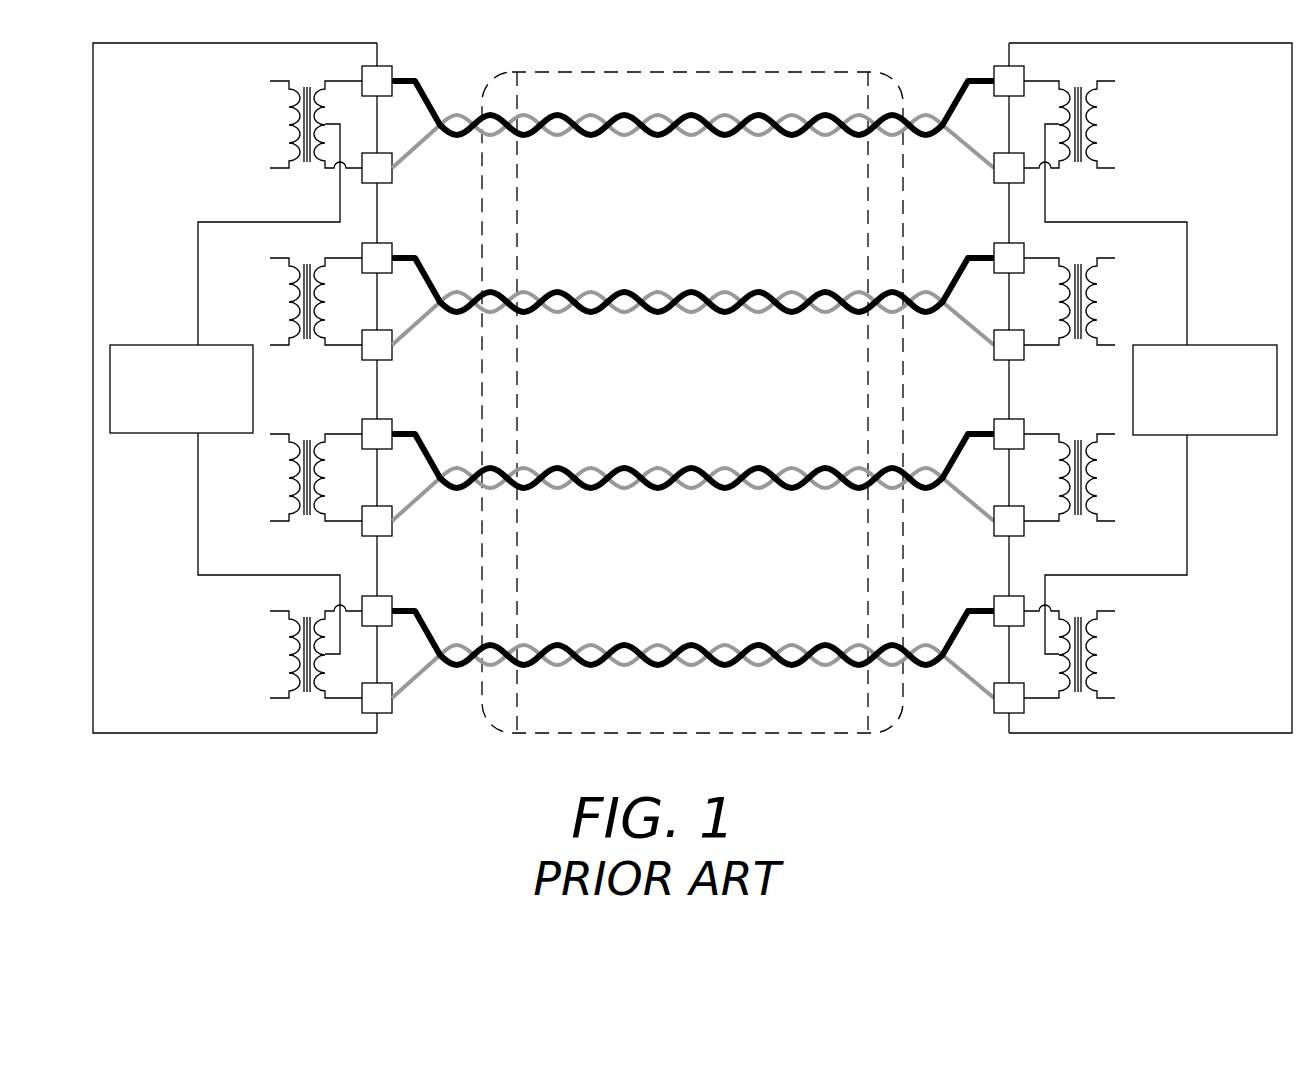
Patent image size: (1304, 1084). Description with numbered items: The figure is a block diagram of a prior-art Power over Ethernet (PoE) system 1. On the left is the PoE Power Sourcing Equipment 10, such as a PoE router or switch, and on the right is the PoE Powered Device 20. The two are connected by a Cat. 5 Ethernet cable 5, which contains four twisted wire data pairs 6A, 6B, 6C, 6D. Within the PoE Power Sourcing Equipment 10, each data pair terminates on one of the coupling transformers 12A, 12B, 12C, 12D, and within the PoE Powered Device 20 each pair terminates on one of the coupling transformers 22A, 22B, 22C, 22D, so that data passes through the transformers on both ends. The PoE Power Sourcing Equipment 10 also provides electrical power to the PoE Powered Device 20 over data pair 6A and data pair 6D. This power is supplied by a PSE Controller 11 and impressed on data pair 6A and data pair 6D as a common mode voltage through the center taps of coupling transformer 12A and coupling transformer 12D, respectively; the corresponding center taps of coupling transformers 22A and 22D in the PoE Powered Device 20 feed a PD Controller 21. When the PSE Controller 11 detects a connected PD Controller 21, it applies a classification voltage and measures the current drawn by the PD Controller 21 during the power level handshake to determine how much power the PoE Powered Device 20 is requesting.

The Power over Ethernet system 1 is at (692, 427).
The Cat. 5 Ethernet cable 5 is at (693, 435).
The data pair 6A is at (625, 113).
The data pair 6B is at (620, 292).
The data pair 6C is at (614, 470).
The data pair 6D is at (642, 650).
The PoE Power Sourcing Equipment 10 is at (266, 418).
The PSE Controller 11 is at (151, 342).
The coupling transformer 12A is at (291, 124).
The coupling transformer 12B is at (291, 301).
The coupling transformer 12C is at (290, 477).
The coupling transformer 12D is at (290, 651).
The PoE Powered Device 20 is at (1118, 402).
The PD Controller 21 is at (1132, 382).
The coupling transformer 22A is at (1093, 124).
The coupling transformer 22B is at (1093, 301).
The coupling transformer 22C is at (1094, 477).
The coupling transformer 22D is at (1095, 651).